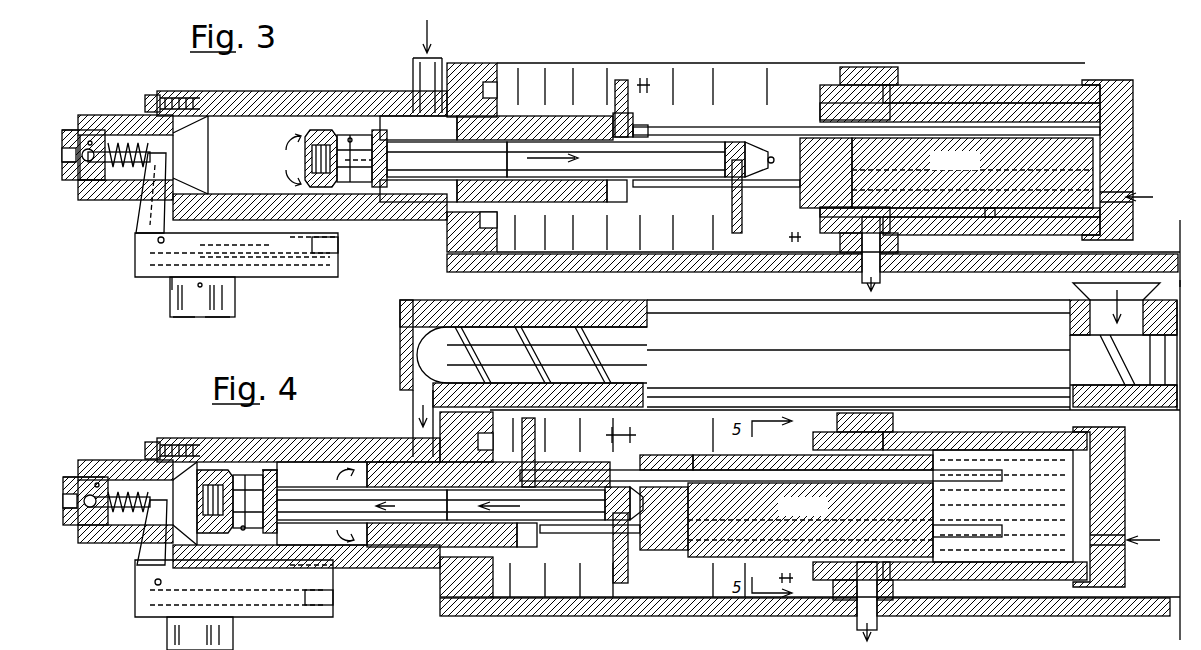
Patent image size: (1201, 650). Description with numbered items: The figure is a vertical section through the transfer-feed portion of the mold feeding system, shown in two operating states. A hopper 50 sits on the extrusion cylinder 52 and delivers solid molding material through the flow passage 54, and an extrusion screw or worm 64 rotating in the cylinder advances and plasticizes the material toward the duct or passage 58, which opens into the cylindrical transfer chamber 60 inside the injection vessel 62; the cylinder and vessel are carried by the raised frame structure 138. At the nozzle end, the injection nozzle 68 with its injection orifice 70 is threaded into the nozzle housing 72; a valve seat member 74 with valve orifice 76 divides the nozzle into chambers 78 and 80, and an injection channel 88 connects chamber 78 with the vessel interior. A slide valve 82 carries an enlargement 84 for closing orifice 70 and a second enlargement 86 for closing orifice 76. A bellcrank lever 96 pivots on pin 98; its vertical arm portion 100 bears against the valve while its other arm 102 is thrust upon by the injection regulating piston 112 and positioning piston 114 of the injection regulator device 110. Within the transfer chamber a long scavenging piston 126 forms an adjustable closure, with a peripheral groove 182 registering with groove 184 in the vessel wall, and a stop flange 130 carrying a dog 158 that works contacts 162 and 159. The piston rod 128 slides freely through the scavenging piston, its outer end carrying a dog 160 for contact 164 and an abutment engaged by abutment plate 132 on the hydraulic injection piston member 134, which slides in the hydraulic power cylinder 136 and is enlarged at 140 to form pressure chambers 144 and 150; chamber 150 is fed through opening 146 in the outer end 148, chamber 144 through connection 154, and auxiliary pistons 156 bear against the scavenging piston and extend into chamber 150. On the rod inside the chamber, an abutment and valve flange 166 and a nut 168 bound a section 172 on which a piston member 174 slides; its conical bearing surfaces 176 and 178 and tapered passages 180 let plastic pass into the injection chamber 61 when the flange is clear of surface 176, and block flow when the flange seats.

In FIG. 4, the hopper 50 is at (1073, 287).
In FIG. 4, the extrusion cylinder 52 is at (613, 300).
In FIG. 4, the molding material flow passage 54 is at (1090, 320).
In FIG. 3, the duct or passage 58 is at (413, 65).
In FIG. 4, the duct or passage 58 is at (413, 393).
In FIG. 3, the cylindrical transfer chamber 60 is at (447, 225).
In FIG. 4, the cylindrical transfer chamber 60 is at (322, 458).
In FIG. 3, the injection chamber 61 is at (230, 155).
In FIG. 4, the injection chamber 61 is at (218, 468).
In FIG. 3, the injection vessel 62 is at (245, 100).
In FIG. 4, the injection vessel 62 is at (292, 448).
In FIG. 4, the extrusion screw or worm 64 is at (640, 357).
In FIG. 3, the injection nozzle 68 is at (80, 187).
In FIG. 3, the injection orifice 70 is at (62, 155).
In FIG. 4, the injection orifice 70 is at (63, 503).
In FIG. 3, the nozzle housing 72 is at (132, 115).
In FIG. 4, the nozzle housing 72 is at (115, 460).
In FIG. 3, the valve seat member 74 is at (98, 163).
In FIG. 3, the valve orifice 76 is at (90, 140).
In FIG. 4, the valve orifice 76 is at (72, 477).
In FIG. 4, the nozzle chamber 78 is at (97, 477).
In FIG. 3, the nozzle chamber 80 is at (72, 130).
In FIG. 4, the nozzle chamber 80 is at (68, 488).
In FIG. 3, the slide valve 82 is at (115, 142).
In FIG. 4, the slide valve 82 is at (137, 492).
In FIG. 3, the enlargement 84 is at (65, 170).
In FIG. 4, the enlargement 84 is at (66, 516).
In FIG. 3, the second enlargement 86 is at (82, 198).
In FIG. 3, the injection channel 88 is at (180, 96).
In FIG. 4, the injection channel 88 is at (168, 442).
In FIG. 3, the bellcrank lever 96 is at (296, 278).
In FIG. 3, the pin 98 is at (157, 241).
In FIG. 3, the vertical arm portion 100 is at (150, 208).
In FIG. 3, the arm 102 is at (338, 250).
In FIG. 4, the arm 102 is at (312, 605).
In FIG. 3, the injection regulator device 110 is at (235, 302).
In FIG. 3, the injection regulating piston 112 is at (172, 284).
In FIG. 3, the positioning piston 114 is at (265, 255).
In FIG. 3, the scavenging piston 126 is at (530, 116).
In FIG. 4, the scavenging piston 126 is at (410, 548).
In FIG. 3, the piston rod 128 is at (640, 159).
In FIG. 4, the piston rod 128 is at (522, 505).
In FIG. 3, the stop flange 130 is at (640, 124).
In FIG. 3, the abutment plate 132 is at (818, 92).
In FIG. 4, the abutment plate 132 is at (655, 550).
In FIG. 3, the hydraulic injection piston member 134 is at (946, 173).
In FIG. 4, the hydraulic injection piston member 134 is at (810, 520).
In FIG. 3, the hydraulic power cylinder 136 is at (925, 232).
In FIG. 4, the hydraulic power cylinder 136 is at (958, 572).
In FIG. 4, the frame structure 138 is at (630, 616).
In FIG. 3, the enlarged piston portion 140 is at (1052, 100).
In FIG. 4, the enlarged piston portion 140 is at (905, 450).
In FIG. 3, the fluid pressure chamber 144 is at (990, 235).
In FIG. 3, the opening 146 is at (1130, 192).
In FIG. 4, the opening 146 is at (1115, 545).
In FIG. 3, the outer end 148 is at (1142, 62).
In FIG. 4, the outer end 148 is at (1115, 472).
In FIG. 4, the fluid pressure chamber 150 is at (1003, 506).
In FIG. 3, the connection 154 is at (862, 262).
In FIG. 4, the connection 154 is at (893, 600).
In FIG. 3, the abutment rods or auxiliary pistons 156 is at (723, 127).
In FIG. 4, the abutment rods or auxiliary pistons 156 is at (752, 472).
In FIG. 3, the dog 158 is at (615, 95).
In FIG. 4, the dog 158 is at (535, 433).
In FIG. 4, the contacts 159 is at (636, 432).
In FIG. 3, the dog 160 is at (732, 220).
In FIG. 4, the dog 160 is at (613, 553).
In FIG. 3, the electrical contact 162 is at (642, 80).
In FIG. 3, the electrical contact 164 is at (792, 240).
In FIG. 4, the electrical contact 164 is at (795, 590).
In FIG. 3, the abutment and valve flange 166 is at (447, 159).
In FIG. 4, the abutment and valve flange 166 is at (362, 505).
In FIG. 3, the nut 168 is at (318, 128).
In FIG. 4, the nut 168 is at (207, 478).
In FIG. 3, the section of the piston rod 172 is at (380, 128).
In FIG. 4, the section of the piston rod 172 is at (270, 534).
In FIG. 4, the piston member 174 is at (268, 473).
In FIG. 3, the bearing surface 176 is at (438, 200).
In FIG. 4, the bearing surface 176 is at (320, 548).
In FIG. 3, the bearing surface 178 is at (345, 128).
In FIG. 4, the bearing surface 178 is at (243, 535).
In FIG. 3, the tapered passages 180 is at (355, 133).
In FIG. 4, the tapered passages 180 is at (249, 473).
In FIG. 3, the channel or groove 182 is at (468, 75).
In FIG. 4, the channel or groove 182 is at (335, 465).
In FIG. 4, the registering groove 184 is at (378, 466).